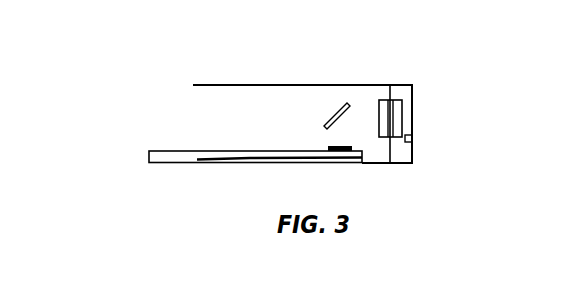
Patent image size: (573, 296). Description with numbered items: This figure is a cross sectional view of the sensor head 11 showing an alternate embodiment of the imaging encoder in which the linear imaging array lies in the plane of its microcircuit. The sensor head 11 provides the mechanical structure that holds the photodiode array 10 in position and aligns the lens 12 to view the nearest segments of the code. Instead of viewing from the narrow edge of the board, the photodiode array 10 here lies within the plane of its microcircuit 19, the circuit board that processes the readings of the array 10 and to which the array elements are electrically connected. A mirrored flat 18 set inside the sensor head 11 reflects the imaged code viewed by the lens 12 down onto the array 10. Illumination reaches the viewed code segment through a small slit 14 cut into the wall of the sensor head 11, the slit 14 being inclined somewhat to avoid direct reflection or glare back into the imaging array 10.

The linear imaging array 10 is at (322, 142).
The sensor head 11 is at (220, 85).
The lens 12 is at (394, 100).
The illumination slit 14 is at (413, 135).
The mirrored flat 18 is at (338, 104).
The microcircuit board 19 is at (165, 166).